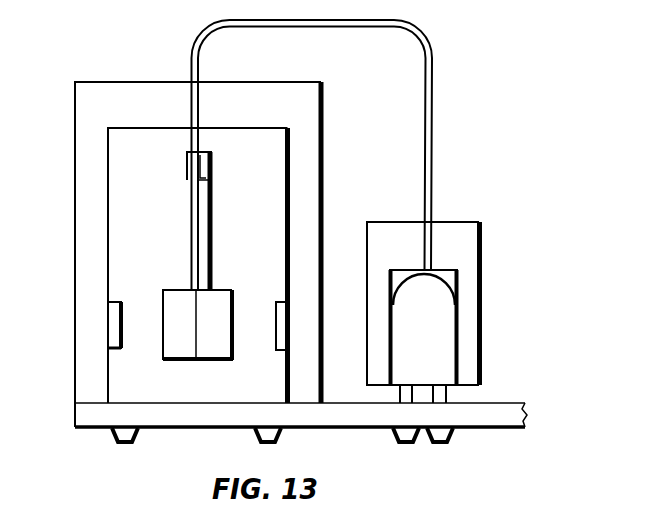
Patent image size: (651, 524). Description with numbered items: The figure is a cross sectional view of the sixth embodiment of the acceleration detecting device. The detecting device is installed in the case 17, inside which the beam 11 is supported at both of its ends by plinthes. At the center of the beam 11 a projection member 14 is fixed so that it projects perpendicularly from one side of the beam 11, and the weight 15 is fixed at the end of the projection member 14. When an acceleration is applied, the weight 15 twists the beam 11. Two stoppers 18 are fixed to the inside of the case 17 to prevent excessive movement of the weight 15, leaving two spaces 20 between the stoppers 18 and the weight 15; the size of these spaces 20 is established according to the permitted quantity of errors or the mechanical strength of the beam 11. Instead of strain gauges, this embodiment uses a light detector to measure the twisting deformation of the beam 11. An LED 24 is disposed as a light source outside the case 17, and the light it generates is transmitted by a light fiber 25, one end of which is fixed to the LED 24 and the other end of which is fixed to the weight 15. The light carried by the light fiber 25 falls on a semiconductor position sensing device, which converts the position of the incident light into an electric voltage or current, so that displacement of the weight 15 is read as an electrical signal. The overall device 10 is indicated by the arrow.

The apparatus 10 is at (459, 124).
The beam 11 is at (212, 163).
The projection member 14 is at (205, 242).
The weight 15 is at (173, 307).
The case 17 is at (116, 87).
The stoppers 18 is at (112, 313).
The spaces 20 is at (137, 342).
The LED 24 is at (443, 333).
The light fiber 25 is at (365, 27).